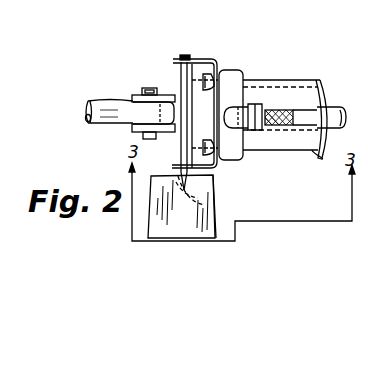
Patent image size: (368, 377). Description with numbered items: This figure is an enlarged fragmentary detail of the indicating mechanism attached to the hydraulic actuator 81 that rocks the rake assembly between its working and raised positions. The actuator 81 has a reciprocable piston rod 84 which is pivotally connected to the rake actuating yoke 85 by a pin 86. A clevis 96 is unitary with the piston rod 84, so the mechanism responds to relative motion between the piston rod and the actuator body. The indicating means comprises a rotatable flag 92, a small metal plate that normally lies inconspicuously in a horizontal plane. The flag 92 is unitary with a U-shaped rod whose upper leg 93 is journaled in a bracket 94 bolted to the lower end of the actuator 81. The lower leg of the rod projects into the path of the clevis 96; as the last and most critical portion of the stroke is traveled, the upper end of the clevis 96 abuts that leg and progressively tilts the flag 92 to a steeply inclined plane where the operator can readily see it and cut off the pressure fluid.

The hydraulic actuator 81 is at (315, 92).
The piston rod 84 is at (330, 108).
The rake actuating yoke 85 is at (97, 102).
The pin 86 is at (148, 88).
The rotatable flag 92 is at (197, 212).
The upper leg of U-shaped rod 93 is at (178, 72).
The bracket 94 is at (209, 58).
The clevis 96 is at (135, 127).